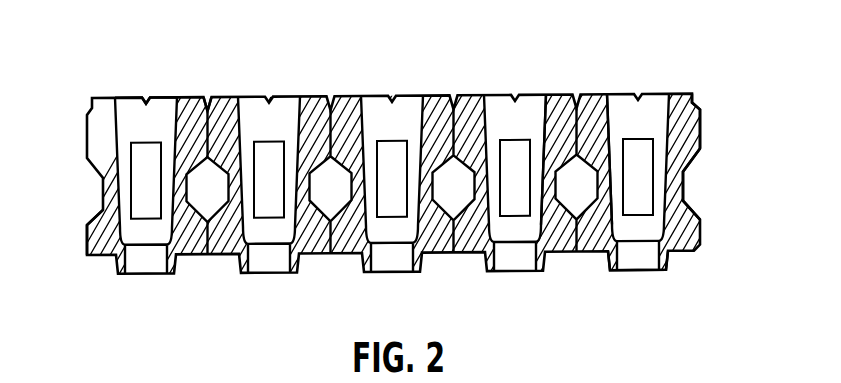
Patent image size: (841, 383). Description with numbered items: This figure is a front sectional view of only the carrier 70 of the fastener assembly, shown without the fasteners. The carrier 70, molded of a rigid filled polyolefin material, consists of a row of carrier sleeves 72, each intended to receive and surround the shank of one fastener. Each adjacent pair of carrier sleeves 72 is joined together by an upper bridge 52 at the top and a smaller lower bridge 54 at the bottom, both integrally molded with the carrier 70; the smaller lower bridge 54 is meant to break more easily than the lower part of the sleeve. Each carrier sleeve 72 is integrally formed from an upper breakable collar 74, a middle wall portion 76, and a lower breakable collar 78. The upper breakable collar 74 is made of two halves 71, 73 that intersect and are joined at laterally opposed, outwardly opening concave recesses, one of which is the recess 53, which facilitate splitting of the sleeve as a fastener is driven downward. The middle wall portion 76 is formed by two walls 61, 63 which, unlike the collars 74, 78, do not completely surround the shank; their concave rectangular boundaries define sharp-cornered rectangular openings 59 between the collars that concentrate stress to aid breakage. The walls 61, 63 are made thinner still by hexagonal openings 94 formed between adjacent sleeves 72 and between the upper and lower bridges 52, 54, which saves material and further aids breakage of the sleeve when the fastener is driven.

The carrier 70 is at (90, 136).
The carrier sleeve 72 is at (90, 242).
The concave recess 53 is at (149, 97).
The upper bridge 52 is at (207, 99).
The lower bridge 54 is at (209, 255).
The rectangular opening 59 is at (389, 209).
The half of upper breakable collar 71 is at (507, 111).
The half of upper breakable collar 73 is at (537, 107).
The hexagonal opening 94 is at (581, 178).
The upper breakable collar 74 is at (641, 113).
The middle wall 61 is at (611, 96).
The middle wall 63 is at (702, 112).
The middle wall portion 76 is at (679, 193).
The lower breakable collar 78 is at (655, 228).